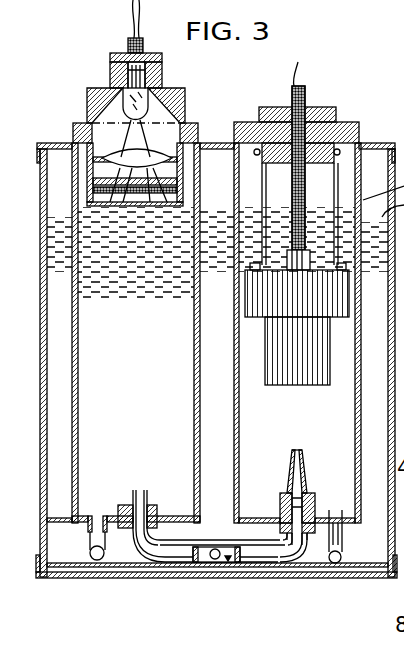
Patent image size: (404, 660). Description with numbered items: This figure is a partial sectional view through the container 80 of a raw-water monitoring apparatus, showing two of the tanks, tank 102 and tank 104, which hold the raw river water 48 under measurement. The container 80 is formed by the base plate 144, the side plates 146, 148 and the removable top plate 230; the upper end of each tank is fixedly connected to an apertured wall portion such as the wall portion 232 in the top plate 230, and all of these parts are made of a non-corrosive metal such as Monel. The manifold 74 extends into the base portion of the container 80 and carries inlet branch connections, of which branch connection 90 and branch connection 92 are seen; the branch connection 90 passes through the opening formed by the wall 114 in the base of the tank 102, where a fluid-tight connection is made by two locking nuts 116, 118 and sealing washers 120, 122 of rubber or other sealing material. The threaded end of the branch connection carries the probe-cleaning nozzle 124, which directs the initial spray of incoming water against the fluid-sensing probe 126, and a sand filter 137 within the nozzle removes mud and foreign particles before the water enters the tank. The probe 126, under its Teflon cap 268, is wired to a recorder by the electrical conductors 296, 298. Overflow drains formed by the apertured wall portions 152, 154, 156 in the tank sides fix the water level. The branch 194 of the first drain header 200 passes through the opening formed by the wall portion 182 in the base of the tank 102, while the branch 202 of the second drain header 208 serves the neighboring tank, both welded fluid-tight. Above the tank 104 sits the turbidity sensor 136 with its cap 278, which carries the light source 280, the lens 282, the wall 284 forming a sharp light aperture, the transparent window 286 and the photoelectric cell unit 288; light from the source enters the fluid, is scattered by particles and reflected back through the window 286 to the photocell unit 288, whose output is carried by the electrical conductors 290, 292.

The raw river water 48 is at (56, 243).
The electrical conductor 292 is at (131, 36).
The electrical conductor 290 is at (140, 36).
The light source 280 is at (130, 100).
The cap 278 is at (174, 88).
The apertured wall portion 156 is at (66, 143).
The lens 282 is at (133, 152).
The wall forming a sharp light aperture 284 is at (126, 186).
The transparent window 286 is at (141, 194).
The photoelectric cell unit 288 is at (166, 207).
The turbidity sensor 136 is at (107, 210).
The removable top plate 230 is at (50, 135).
The side plate 146 is at (48, 440).
The tank 104 is at (79, 388).
The apertured wall portion 154 is at (202, 197).
The apertured wall portion 152 is at (234, 197).
The cap 268 is at (343, 124).
The electrical conductor 296 is at (302, 86).
The electrical conductor 298 is at (294, 86).
The fluid-sensing probe 126 is at (291, 372).
The tank 102 is at (356, 420).
The side plate 148 is at (387, 392).
The apertured wall portion 232 is at (364, 146).
The container 80 is at (383, 132).
The wall portion 182 is at (217, 551).
The probe-cleaning nozzle 124 is at (304, 459).
The sand filter 137 is at (302, 498).
The sealing washer 120 is at (312, 523).
The locking nut 118 is at (283, 515).
The inlet branch connection 90 is at (260, 557).
The inlet branch connection 92 is at (172, 555).
The sealing washer 122 is at (280, 529).
The manifold 74 is at (232, 565).
The wall 114 is at (306, 563).
The locking nut 116 is at (272, 542).
The branch 202 is at (110, 538).
The second drain header 208 is at (90, 572).
The branch 194 is at (318, 548).
The first drain header 200 is at (350, 570).
The base plate 144 is at (57, 583).